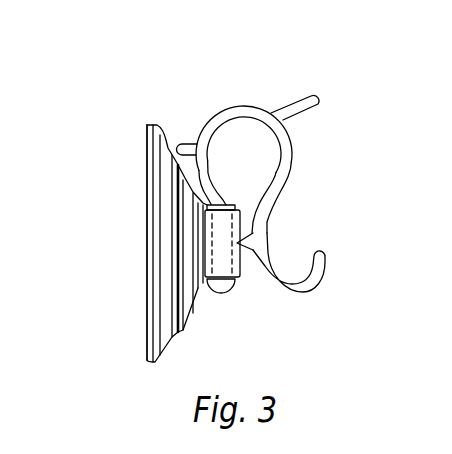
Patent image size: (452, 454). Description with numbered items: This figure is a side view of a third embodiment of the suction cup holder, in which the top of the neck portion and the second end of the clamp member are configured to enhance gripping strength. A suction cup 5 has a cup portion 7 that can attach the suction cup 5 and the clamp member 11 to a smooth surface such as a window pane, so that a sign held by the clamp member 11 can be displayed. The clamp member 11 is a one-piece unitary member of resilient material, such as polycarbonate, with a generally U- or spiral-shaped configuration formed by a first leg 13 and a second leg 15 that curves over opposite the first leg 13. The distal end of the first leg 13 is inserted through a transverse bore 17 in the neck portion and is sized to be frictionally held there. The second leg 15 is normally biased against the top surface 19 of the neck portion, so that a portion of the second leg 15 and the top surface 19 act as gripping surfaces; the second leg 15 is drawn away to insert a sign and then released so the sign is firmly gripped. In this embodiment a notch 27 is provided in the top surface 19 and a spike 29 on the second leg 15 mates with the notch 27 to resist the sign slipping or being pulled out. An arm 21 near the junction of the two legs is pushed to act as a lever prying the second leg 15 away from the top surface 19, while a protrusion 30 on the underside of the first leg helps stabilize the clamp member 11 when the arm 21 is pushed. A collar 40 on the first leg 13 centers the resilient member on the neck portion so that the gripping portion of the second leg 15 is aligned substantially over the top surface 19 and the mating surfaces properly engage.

The suction cup 5 is at (146, 221).
The cup portion 7 is at (142, 168).
The protrusion 30 is at (147, 141).
The collar 40 is at (207, 204).
The first leg 13 is at (209, 121).
The clamp member 11 is at (285, 130).
The second leg 15 is at (280, 170).
The arm 21 is at (314, 98).
The spike 29 is at (256, 233).
The notch 27 is at (253, 250).
The top surface 19 is at (240, 247).
The transverse bore 17 is at (220, 260).